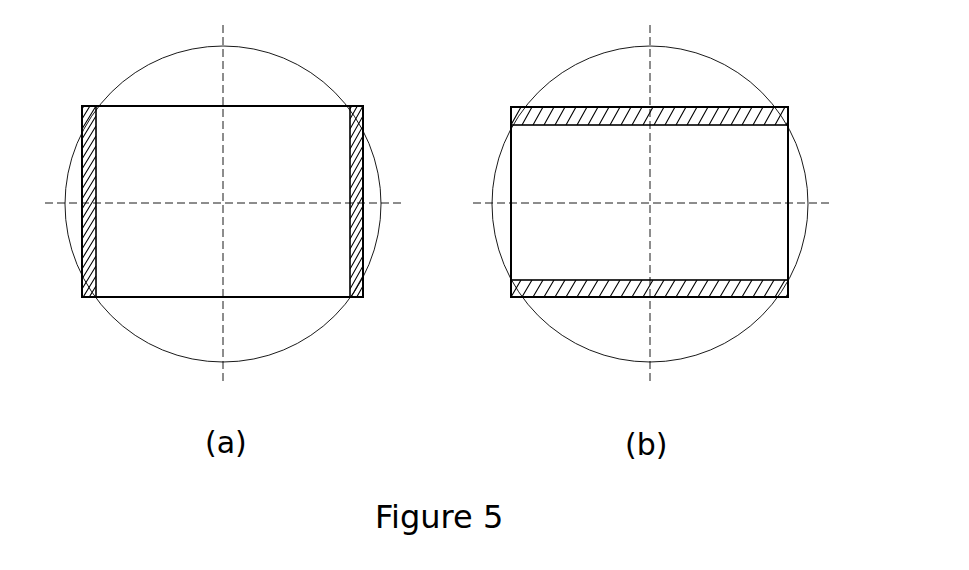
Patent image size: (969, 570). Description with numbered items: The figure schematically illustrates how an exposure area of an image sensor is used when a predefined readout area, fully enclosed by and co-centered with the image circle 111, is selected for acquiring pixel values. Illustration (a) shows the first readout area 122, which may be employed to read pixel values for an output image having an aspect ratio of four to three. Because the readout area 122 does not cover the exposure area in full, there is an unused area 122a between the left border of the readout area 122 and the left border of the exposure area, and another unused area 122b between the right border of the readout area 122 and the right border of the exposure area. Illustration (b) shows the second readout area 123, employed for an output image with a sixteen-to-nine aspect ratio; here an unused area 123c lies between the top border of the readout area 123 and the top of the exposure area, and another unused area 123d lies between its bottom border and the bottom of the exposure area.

The image circle 111 is at (290, 53).
The first readout area 122 is at (129, 122).
The unused area 122a is at (91, 300).
The unused area 122b is at (355, 300).
The second readout area 123 is at (766, 157).
The unused area 123c is at (539, 118).
The unused area 123d is at (539, 290).